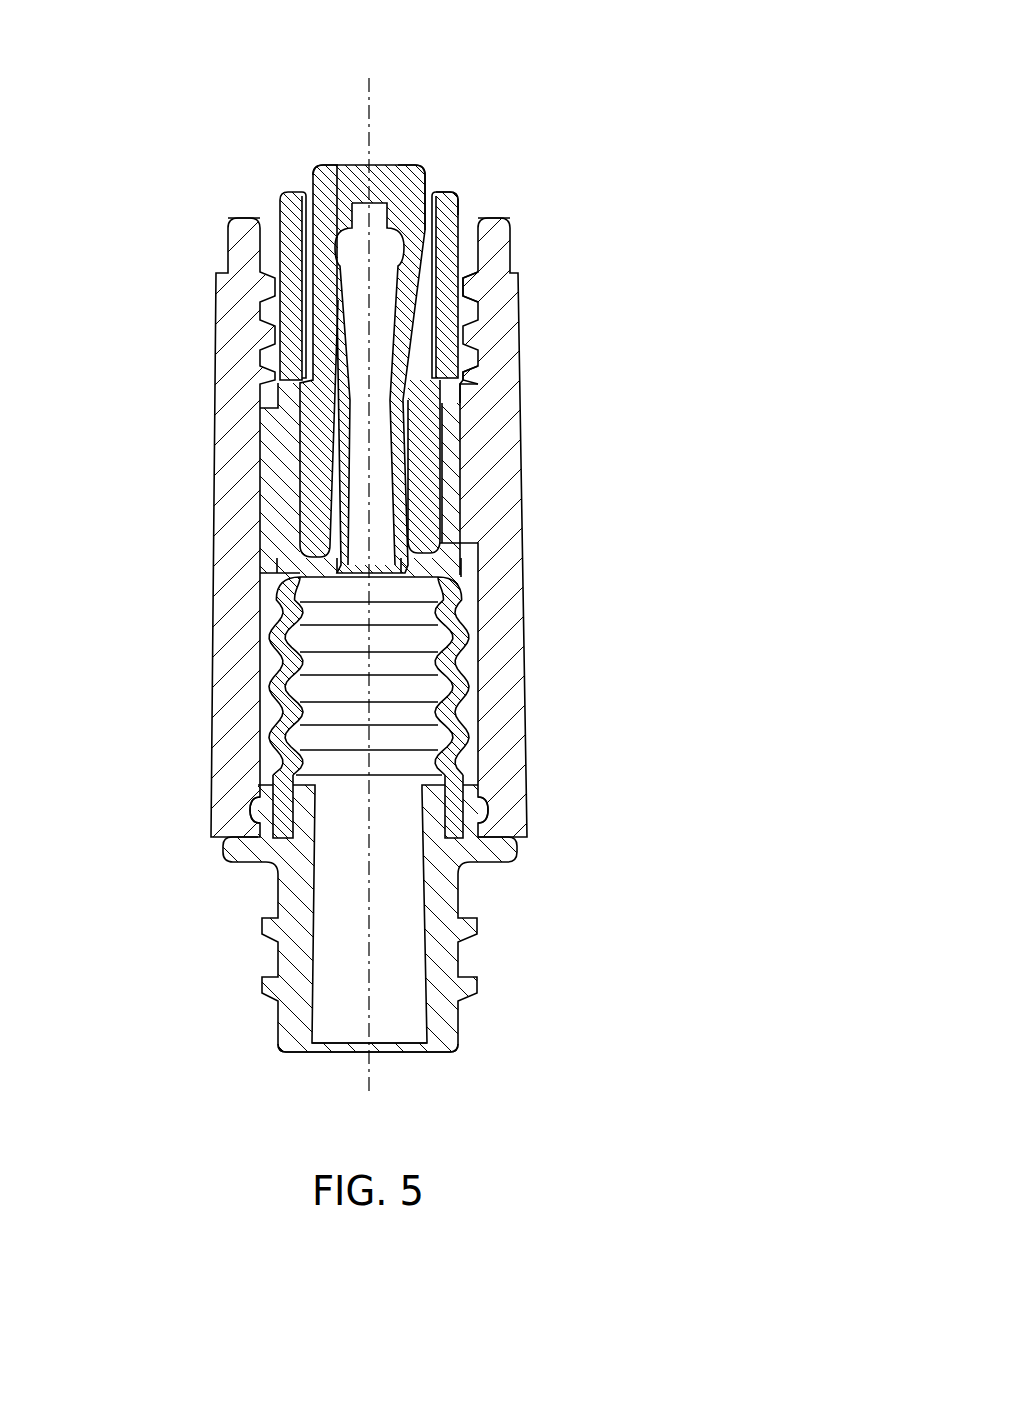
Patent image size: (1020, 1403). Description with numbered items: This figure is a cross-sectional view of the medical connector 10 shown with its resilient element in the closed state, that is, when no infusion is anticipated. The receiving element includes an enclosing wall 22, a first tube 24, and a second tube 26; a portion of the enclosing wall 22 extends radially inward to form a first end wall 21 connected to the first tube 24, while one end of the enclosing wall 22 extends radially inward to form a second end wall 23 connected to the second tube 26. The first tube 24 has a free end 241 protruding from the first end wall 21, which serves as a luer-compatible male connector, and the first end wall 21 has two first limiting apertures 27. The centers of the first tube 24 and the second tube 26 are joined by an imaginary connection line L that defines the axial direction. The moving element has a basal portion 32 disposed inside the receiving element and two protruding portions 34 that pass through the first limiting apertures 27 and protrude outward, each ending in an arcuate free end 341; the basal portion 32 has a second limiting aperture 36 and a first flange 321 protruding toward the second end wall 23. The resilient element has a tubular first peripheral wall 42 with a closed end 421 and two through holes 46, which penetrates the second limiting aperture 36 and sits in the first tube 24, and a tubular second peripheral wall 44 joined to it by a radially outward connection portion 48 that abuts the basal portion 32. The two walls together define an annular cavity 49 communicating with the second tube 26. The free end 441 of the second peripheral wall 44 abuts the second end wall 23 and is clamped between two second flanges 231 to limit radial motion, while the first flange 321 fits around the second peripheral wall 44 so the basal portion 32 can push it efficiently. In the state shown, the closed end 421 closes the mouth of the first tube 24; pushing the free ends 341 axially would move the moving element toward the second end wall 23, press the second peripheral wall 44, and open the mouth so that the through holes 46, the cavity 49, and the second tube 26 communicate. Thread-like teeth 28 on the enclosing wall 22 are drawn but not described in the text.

The medical connector 10 is at (533, 106).
The first end wall 21 is at (478, 382).
The enclosing wall 22 is at (500, 520).
The second end wall 23 is at (490, 875).
The first tube 24 is at (418, 193).
The second tube 26 is at (445, 1033).
The first limiting aperture 27 is at (478, 406).
The thread teeth 28 is at (480, 290).
The basal portion 32 is at (455, 465).
The protruding portion 34 is at (452, 216).
The second limiting aperture 36 is at (287, 480).
The first peripheral wall 42 is at (338, 430).
The second peripheral wall 44 is at (280, 685).
The through hole 46 is at (345, 247).
The connection portion 48 is at (322, 560).
The cavity 49 is at (345, 712).
The second flange 231 is at (482, 824).
The free end 241 is at (406, 165).
The first flange 321 is at (470, 572).
The free end 341 is at (452, 195).
The closed end 421 is at (360, 175).
The free end 441 is at (283, 828).
The imaginary connection line L is at (370, 1075).